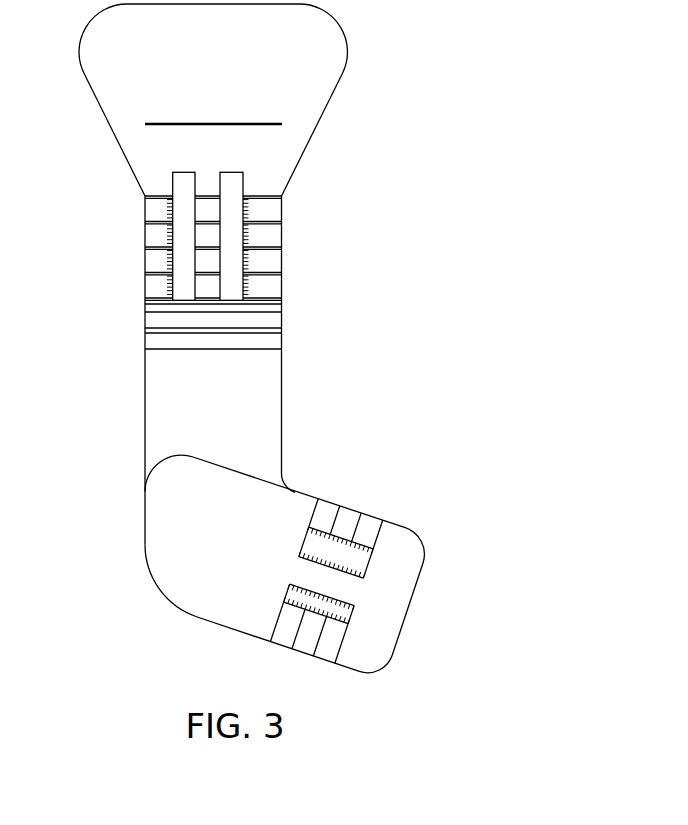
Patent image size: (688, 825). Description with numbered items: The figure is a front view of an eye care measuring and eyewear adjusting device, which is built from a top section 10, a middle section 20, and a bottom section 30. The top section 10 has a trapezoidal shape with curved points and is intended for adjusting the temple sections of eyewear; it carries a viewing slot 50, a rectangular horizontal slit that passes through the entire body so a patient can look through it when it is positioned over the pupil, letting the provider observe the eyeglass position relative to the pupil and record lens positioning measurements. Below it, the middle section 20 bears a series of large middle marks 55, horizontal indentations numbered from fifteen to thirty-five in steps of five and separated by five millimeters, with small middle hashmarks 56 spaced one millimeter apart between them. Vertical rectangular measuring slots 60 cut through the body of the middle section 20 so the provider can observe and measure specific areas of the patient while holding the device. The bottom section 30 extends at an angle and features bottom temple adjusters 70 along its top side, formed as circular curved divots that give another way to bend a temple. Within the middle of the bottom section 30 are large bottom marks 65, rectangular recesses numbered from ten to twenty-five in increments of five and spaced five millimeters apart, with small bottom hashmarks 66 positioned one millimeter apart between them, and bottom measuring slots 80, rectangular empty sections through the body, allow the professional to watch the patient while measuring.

The top section 10 is at (307, 77).
The middle section 20 is at (152, 400).
The bottom section 30 is at (387, 613).
The viewing slot 50 is at (216, 112).
The large middle marks 55 is at (280, 198).
The small middle hashmarks 56 is at (160, 212).
The measuring slots 60 is at (182, 183).
The large bottom marks 65 is at (320, 494).
The small bottom hashmarks 66 is at (366, 534).
The bottom temple adjusters 70 is at (153, 477).
The bottom measuring slots 80 is at (305, 540).